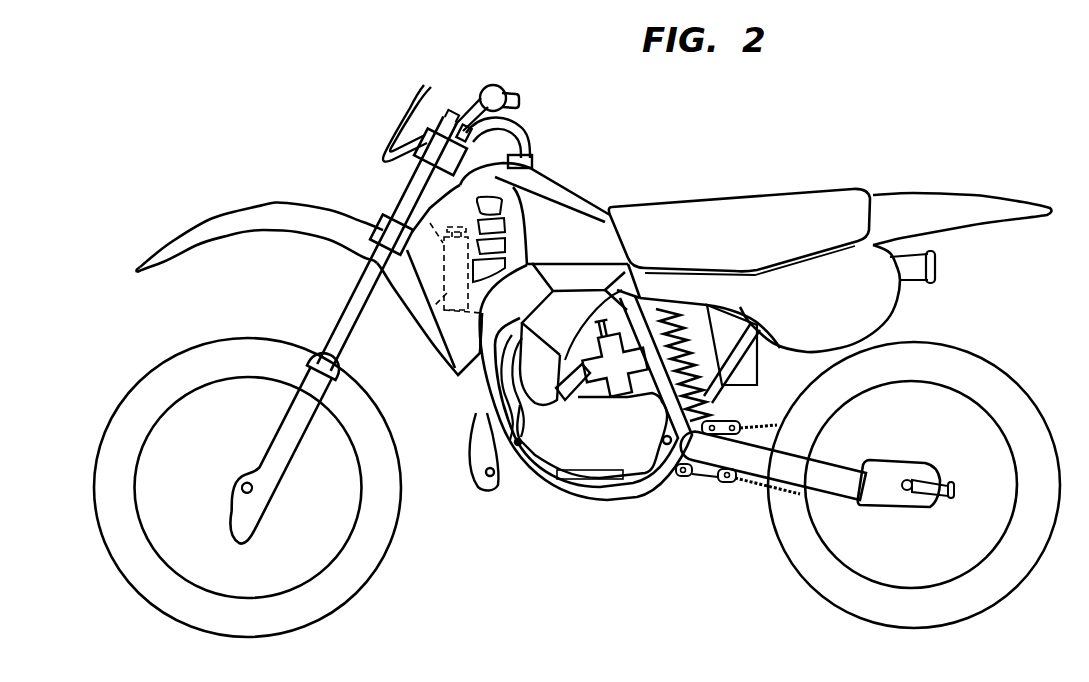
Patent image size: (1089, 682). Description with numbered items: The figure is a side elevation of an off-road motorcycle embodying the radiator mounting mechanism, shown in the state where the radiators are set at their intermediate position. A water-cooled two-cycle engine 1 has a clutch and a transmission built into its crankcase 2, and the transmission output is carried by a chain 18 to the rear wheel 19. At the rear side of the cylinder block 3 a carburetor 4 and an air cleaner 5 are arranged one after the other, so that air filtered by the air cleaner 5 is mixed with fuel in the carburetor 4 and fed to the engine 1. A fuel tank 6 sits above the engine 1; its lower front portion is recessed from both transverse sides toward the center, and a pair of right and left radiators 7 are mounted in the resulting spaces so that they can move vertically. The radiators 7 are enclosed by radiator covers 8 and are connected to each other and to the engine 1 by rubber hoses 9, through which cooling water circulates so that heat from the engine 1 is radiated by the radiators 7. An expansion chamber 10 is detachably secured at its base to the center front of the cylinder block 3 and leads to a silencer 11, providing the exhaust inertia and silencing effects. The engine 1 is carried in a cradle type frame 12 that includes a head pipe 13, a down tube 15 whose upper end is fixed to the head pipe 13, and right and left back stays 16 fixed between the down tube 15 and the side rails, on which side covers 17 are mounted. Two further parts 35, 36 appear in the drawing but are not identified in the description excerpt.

The engine 1 is at (583, 338).
The crankcase 2 is at (643, 463).
The cylinder block 3 is at (560, 403).
The carburetor 4 is at (620, 380).
The air cleaner 5 is at (745, 378).
The fuel tank 6 is at (545, 208).
The radiators 7 is at (450, 305).
The radiator covers 8 is at (455, 350).
The hoses 9 is at (520, 383).
The expansion chamber 10 is at (490, 480).
The silencer 11 is at (921, 264).
The cradle type frame 12 is at (598, 505).
The head pipe 13 is at (407, 210).
The down tube 15 is at (483, 387).
The back stays 16 is at (750, 335).
The side covers 17 is at (883, 305).
The chain 18 is at (743, 488).
The rear wheel 19 is at (997, 588).
The handlebar 35 is at (413, 128).
The front fender 36 is at (173, 247).